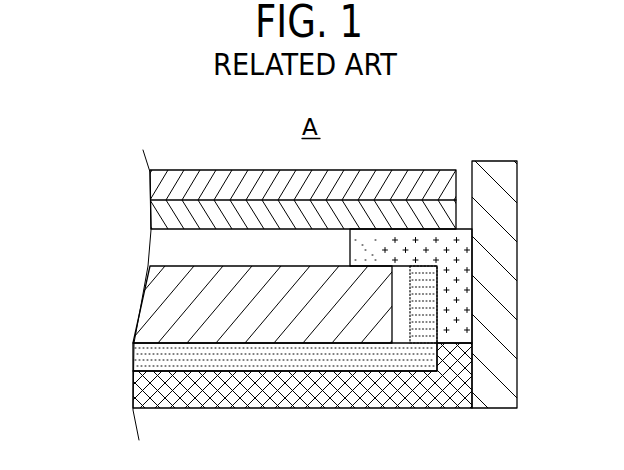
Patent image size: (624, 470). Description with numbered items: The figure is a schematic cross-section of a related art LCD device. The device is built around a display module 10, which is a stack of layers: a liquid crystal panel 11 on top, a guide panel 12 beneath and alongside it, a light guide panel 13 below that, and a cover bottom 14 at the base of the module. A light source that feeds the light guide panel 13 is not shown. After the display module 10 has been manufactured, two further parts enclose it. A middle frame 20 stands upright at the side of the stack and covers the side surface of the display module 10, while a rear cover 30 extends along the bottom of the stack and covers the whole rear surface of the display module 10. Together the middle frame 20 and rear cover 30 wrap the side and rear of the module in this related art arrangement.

The display module 10 is at (72, 192).
The liquid crystal panel 11 is at (138, 173).
The guide panel 12 is at (360, 246).
The light guide panel 13 is at (173, 306).
The cover bottom 14 is at (160, 358).
The middle frame 20 is at (503, 278).
The rear cover 30 is at (162, 392).